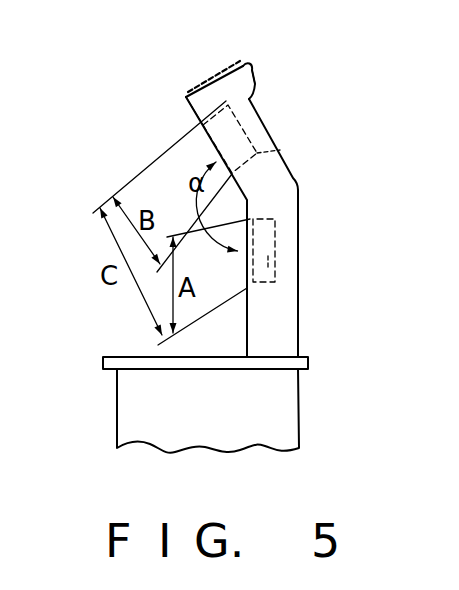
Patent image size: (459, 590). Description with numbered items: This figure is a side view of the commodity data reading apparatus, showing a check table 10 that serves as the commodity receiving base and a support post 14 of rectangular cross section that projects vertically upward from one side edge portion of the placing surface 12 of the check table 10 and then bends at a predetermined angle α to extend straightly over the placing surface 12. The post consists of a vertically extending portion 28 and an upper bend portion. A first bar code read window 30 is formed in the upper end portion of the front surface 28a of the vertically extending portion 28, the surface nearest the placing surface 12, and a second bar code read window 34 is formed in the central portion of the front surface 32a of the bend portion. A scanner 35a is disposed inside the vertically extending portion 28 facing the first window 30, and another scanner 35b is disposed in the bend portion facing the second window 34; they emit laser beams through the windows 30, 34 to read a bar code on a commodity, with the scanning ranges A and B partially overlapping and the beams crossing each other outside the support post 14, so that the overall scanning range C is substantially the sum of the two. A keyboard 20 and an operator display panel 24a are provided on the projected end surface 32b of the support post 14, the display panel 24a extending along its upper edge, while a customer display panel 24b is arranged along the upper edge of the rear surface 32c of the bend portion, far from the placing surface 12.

The check table 10 is at (312, 382).
The placing surface 12 is at (116, 356).
The support post 14 is at (312, 188).
The keyboard 20 is at (199, 89).
The display panel for an operator 24a is at (225, 68).
The display panel for a customer 24b is at (255, 66).
The vertically extending portion 28 is at (284, 312).
The front surface 28a is at (246, 338).
The first bar code read window 30 is at (276, 238).
The front surface 32a is at (191, 108).
The projected end surface 32b is at (187, 99).
The rear surface 32c is at (256, 78).
The second bar code read window 34 is at (243, 126).
The scanner 35a is at (268, 262).
The scanner 35b is at (293, 158).